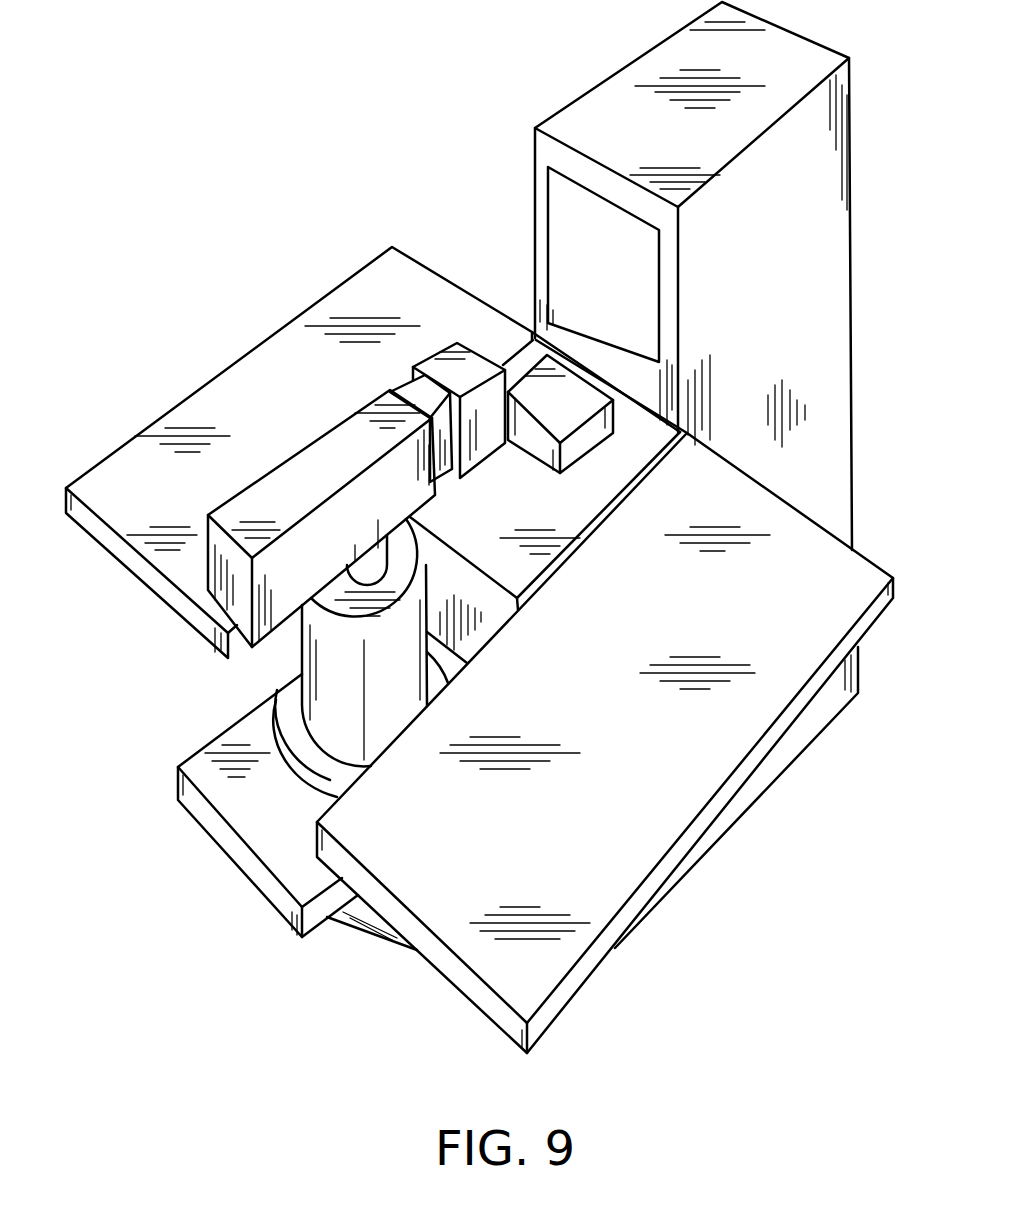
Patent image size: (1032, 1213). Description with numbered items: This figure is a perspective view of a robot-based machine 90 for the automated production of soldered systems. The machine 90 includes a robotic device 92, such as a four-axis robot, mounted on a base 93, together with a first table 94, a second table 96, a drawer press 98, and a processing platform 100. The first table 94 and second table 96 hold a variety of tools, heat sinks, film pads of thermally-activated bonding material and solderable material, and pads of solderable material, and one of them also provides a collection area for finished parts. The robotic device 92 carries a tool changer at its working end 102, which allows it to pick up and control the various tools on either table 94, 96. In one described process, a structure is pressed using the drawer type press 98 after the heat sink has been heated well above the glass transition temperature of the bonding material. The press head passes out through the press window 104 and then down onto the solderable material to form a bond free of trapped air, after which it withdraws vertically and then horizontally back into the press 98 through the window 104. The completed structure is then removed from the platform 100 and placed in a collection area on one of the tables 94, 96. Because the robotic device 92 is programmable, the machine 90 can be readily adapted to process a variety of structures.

The robot-based machine 90 is at (882, 231).
The robotic device 92 is at (268, 617).
The base 93 is at (242, 812).
The first table 94 is at (873, 560).
The second table 96 is at (355, 283).
The drawer press 98 is at (574, 80).
The processing platform 100 is at (575, 452).
The working end 102 is at (484, 460).
The press window 104 is at (662, 327).